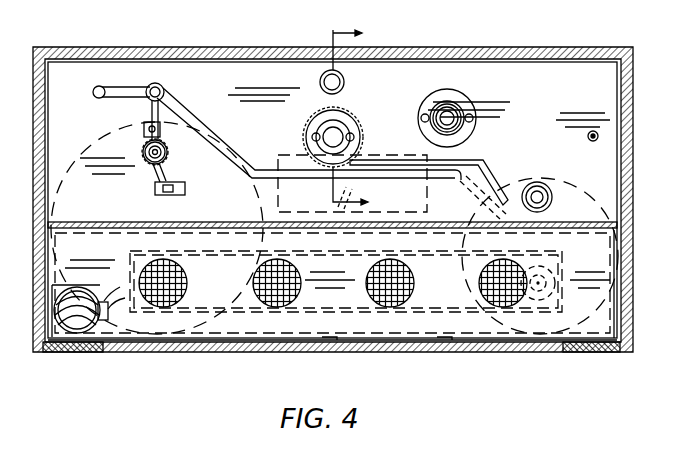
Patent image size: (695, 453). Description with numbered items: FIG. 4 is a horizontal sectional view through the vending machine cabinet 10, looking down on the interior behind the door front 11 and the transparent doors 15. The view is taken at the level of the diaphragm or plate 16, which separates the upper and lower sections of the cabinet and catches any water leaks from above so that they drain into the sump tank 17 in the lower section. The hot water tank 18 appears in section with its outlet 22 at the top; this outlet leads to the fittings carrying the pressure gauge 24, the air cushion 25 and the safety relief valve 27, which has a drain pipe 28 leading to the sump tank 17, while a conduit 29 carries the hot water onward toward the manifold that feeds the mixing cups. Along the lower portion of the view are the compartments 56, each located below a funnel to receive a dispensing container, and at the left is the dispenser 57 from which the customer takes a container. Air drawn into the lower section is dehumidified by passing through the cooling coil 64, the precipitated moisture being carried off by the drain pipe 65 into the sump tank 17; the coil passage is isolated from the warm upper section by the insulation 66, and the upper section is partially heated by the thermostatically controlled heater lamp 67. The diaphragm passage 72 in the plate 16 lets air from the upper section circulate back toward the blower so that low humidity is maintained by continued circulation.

The cabinet 10 is at (567, 46).
The door front 11 is at (553, 348).
The doors 15 is at (190, 350).
The diaphragm or plate 16 is at (603, 182).
The sump tank 17 is at (578, 192).
The hot water tank 18 is at (86, 148).
The outlet 22 is at (130, 150).
The pressure gauge 24 is at (181, 193).
The air cushion 25 is at (168, 152).
The safety relief valve 27 is at (164, 88).
The drain pipe 28 is at (258, 174).
The conduit 29 is at (123, 97).
The compartment 56 is at (613, 281).
The dispenser 57 is at (77, 294).
The cooling coil 64 is at (340, 127).
The drain pipe 65 is at (466, 165).
The insulation 66 is at (363, 143).
The heater lamp 67 is at (456, 110).
The diaphragm passage 72 is at (320, 87).